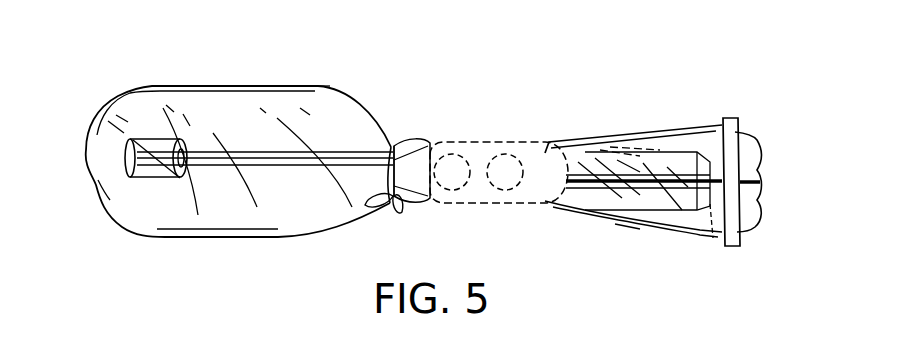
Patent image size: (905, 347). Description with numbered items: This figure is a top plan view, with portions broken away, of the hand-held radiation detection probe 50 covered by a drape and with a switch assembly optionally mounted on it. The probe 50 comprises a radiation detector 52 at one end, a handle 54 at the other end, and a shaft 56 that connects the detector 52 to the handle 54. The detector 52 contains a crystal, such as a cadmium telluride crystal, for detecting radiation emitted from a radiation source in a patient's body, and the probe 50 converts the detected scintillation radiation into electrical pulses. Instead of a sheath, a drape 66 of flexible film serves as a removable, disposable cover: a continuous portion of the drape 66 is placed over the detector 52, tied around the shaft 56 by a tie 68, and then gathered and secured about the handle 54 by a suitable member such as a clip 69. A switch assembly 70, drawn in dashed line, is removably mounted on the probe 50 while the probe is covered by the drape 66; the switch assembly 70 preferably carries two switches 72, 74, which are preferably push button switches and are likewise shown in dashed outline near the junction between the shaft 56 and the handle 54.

The probe 50 is at (268, 144).
The radiation detector 52 is at (150, 179).
The handle 54 is at (580, 152).
The shaft 56 is at (275, 168).
The drape 66 is at (320, 84).
The tie 68 is at (390, 150).
The clip 69 is at (738, 118).
The switch assembly 70 is at (463, 205).
The switch 72 is at (458, 162).
The switch 74 is at (504, 163).